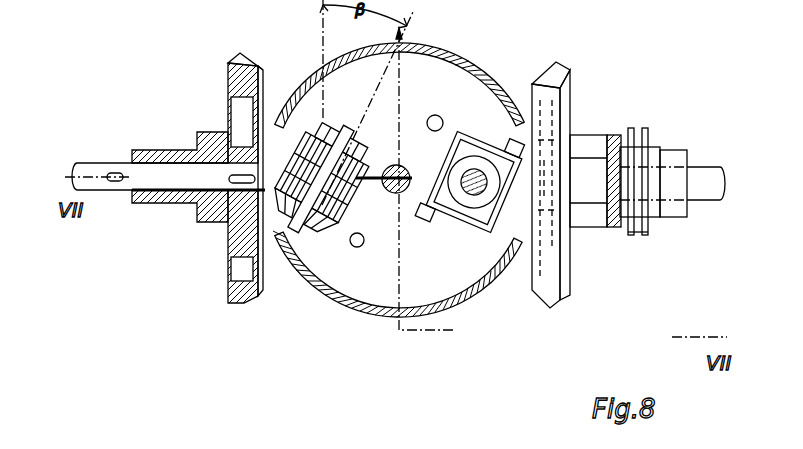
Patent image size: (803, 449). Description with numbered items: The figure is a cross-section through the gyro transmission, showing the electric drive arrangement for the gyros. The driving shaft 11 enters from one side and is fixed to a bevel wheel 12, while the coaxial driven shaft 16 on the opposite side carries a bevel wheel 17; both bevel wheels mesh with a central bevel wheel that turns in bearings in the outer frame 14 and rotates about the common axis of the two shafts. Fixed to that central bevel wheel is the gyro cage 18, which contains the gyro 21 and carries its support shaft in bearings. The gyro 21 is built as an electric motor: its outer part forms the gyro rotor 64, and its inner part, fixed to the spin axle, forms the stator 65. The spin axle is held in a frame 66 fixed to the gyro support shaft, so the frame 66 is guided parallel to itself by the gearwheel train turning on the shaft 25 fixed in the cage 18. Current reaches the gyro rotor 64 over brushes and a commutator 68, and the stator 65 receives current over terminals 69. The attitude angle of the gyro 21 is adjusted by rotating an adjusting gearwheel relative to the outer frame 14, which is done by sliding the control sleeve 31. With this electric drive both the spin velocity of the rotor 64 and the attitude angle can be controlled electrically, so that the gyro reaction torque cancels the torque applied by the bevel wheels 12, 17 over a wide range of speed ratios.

The driving shaft 11 is at (196, 191).
The bevel wheel 12 is at (239, 75).
The outer frame 14 is at (206, 148).
The driven shaft 16 is at (595, 197).
The bevel wheel 17 is at (565, 88).
The gyro cage 18 is at (428, 283).
The gyro 21 is at (405, 173).
The shaft 25 is at (431, 115).
The control sleeve 31 is at (642, 232).
The gyro rotor 64 is at (357, 200).
The stator 65 is at (348, 216).
The frame 66 is at (319, 222).
The commutator 68 is at (352, 139).
The terminals 69 is at (302, 222).